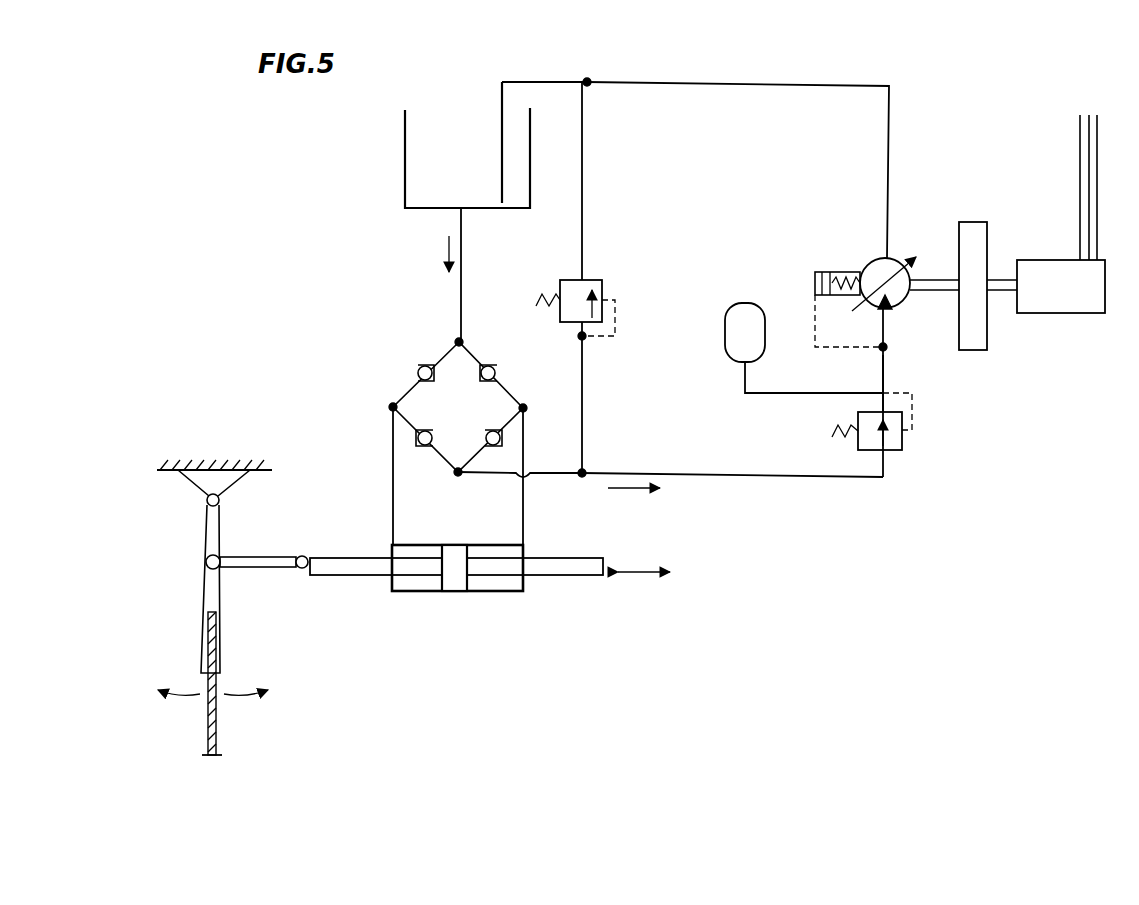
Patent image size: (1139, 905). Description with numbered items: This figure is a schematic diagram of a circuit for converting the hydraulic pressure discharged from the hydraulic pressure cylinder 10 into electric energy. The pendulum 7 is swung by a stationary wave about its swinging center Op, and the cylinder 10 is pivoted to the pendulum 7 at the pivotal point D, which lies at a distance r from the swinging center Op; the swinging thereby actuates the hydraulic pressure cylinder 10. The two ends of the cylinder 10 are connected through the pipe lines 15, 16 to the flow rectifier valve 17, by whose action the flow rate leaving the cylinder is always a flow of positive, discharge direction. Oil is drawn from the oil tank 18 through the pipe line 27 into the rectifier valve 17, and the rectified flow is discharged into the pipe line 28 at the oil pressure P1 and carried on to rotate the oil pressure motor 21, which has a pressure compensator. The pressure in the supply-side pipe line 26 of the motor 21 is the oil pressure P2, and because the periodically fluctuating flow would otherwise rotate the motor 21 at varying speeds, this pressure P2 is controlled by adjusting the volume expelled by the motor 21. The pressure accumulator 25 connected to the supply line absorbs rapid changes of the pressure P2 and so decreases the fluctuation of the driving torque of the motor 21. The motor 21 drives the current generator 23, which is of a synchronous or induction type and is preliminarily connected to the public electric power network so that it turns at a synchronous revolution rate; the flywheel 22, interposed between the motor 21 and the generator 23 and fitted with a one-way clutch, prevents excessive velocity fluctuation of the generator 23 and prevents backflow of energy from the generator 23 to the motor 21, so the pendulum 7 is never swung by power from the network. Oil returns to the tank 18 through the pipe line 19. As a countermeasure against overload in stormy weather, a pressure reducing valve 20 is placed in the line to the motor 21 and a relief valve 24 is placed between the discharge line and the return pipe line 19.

The pendulum 7 is at (216, 640).
The hydraulic pressure cylinder 10 is at (448, 594).
The pipe line 15 is at (392, 500).
The pipe line 16 is at (525, 514).
The flow rectifier valve 17 is at (404, 374).
The oil tank 18 is at (404, 145).
The pipe line 19 is at (734, 85).
The pressure reducing valve 20 is at (902, 448).
The oil pressure motor with a pressure compensator 21 is at (900, 253).
The flywheel with a one way clutch 22 is at (972, 228).
The AC current generator 23 is at (1078, 303).
The relief valve 24 is at (605, 283).
The pressure accumulator 25 is at (746, 316).
The pipe line 26 is at (884, 375).
The pipe line 27 is at (464, 238).
The pipe line 28 is at (738, 475).
The swinging center of the pendulum Op is at (222, 500).
The pivotal point of the cylinder D is at (220, 568).
The distance between the swinging center and the pivotal point r is at (200, 558).
The oil pressure P1 is at (780, 501).
The oil pressure P2 is at (912, 349).